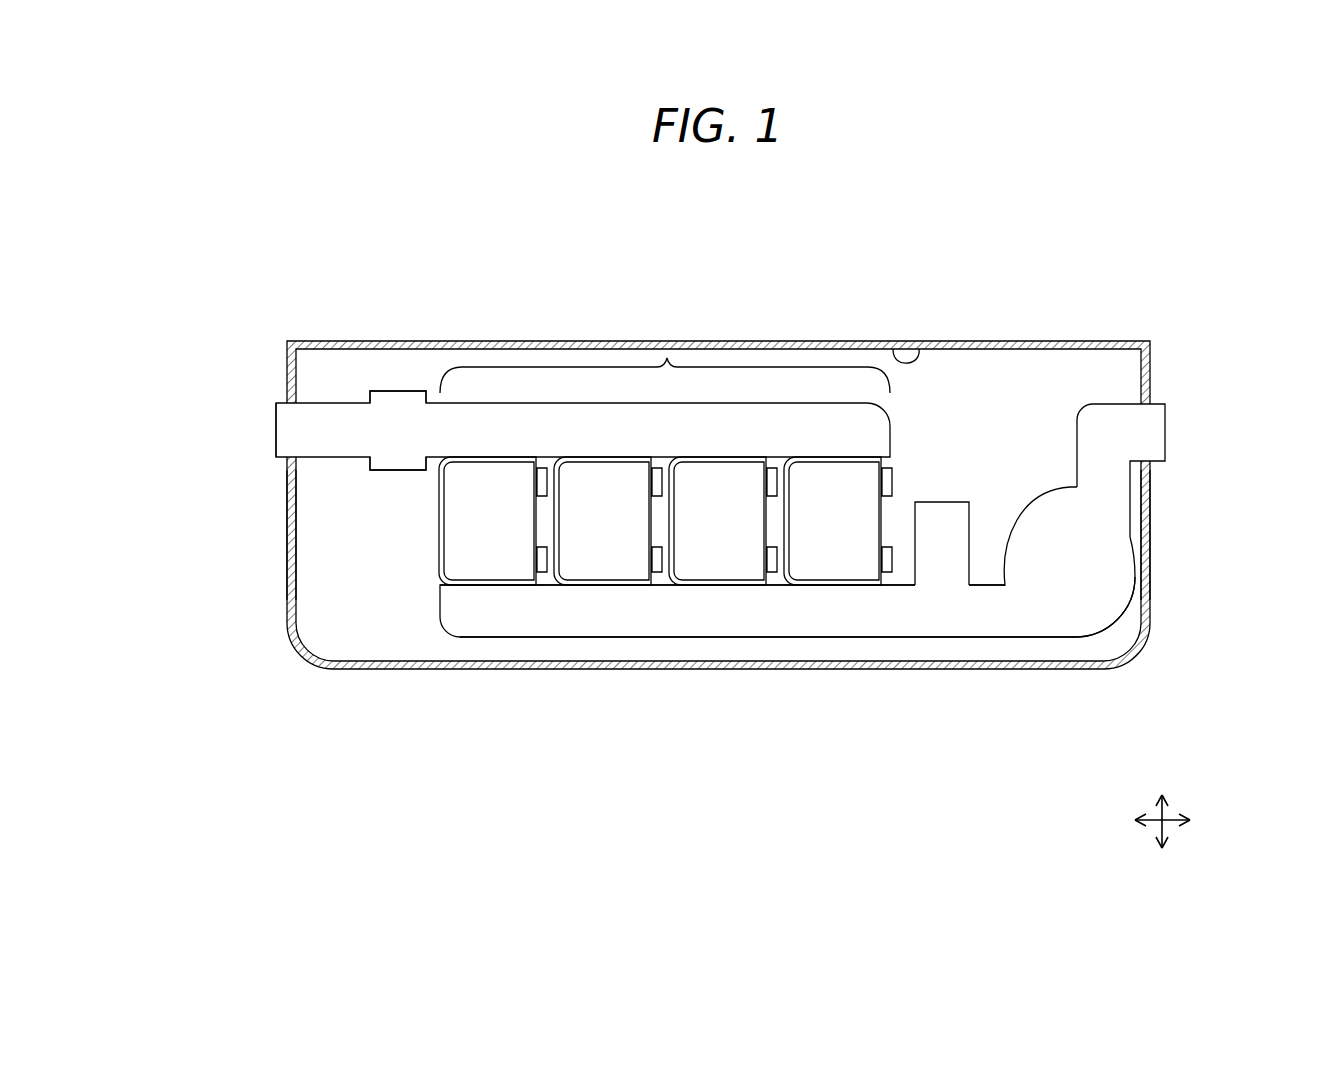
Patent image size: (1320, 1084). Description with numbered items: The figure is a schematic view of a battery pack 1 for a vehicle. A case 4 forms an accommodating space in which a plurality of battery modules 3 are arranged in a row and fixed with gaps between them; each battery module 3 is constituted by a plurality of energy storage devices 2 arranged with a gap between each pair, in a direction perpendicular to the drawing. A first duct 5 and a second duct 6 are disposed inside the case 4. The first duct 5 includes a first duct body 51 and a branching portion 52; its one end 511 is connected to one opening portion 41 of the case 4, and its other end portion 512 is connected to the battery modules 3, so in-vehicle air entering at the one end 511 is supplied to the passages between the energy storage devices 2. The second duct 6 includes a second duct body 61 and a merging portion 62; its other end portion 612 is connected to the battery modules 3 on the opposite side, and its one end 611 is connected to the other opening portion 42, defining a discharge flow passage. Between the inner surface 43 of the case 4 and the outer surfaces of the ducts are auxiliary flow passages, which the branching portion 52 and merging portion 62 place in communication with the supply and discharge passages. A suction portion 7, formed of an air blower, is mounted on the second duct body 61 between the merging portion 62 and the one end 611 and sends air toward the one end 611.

The battery pack 1 is at (1075, 280).
The energy storage device 2 is at (438, 520).
The battery module 3 is at (435, 552).
The case 4 is at (979, 341).
The opening portion 41 is at (283, 465).
The opening portion 42 is at (1148, 464).
The inner surface 43 is at (893, 349).
The first duct 5 is at (435, 230).
The first duct body 51 is at (333, 403).
The branching portion 52 is at (403, 391).
The one end 511 is at (276, 458).
The other end portion 512 is at (667, 358).
The second duct 6 is at (1028, 775).
The second duct body 61 is at (955, 637).
The merging portion 62 is at (969, 548).
The one end 611 is at (1166, 462).
The other end portion 612 is at (440, 682).
The suction portion 7 is at (1115, 618).